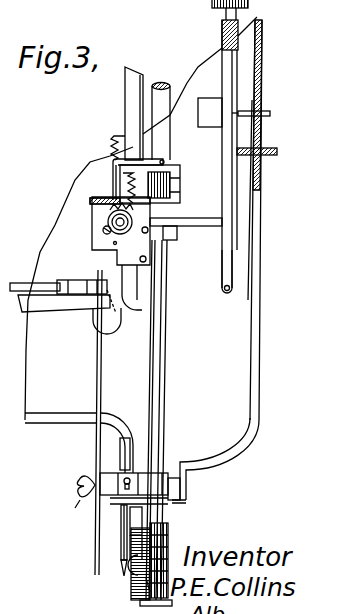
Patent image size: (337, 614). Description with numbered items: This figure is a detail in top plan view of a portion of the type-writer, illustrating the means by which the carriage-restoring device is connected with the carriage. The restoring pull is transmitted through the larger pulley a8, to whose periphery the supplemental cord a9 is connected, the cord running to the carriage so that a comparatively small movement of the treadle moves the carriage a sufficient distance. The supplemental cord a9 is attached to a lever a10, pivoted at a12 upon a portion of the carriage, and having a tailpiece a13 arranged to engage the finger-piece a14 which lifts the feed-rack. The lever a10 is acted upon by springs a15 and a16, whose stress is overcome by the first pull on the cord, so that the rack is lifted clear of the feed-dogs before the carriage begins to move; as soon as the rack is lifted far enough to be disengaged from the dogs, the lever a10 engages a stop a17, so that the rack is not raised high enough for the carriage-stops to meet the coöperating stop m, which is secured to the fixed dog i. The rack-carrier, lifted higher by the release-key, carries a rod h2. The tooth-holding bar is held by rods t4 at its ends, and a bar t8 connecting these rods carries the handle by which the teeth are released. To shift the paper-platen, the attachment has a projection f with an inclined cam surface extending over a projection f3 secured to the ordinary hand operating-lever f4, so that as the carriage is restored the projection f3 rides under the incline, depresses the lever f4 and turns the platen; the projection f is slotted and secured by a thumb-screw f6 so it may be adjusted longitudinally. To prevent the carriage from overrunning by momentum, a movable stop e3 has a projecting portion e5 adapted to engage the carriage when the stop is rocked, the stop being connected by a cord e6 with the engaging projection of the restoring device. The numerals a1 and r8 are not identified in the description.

The projection f is at (97, 391).
The rod h2 is at (252, 30).
The coöperating stop m is at (262, 112).
The fixed dog i is at (258, 122).
The supplemental cord a9 is at (160, 395).
The spring a15 is at (112, 136).
The lever a10 is at (113, 163).
The spring a16 is at (135, 188).
The pivot a12 is at (95, 193).
The stop a17 is at (93, 202).
The tailpiece a13 is at (97, 225).
The hand operating-lever f4 is at (32, 282).
The finger-piece a14 is at (103, 264).
The projection f3 is at (90, 297).
The bar t8 is at (230, 271).
The rod t4 is at (232, 289).
The projecting portion e5 is at (125, 470).
The thumb-screw f6 is at (87, 499).
The cord e6 is at (123, 520).
The movable stop e3 is at (123, 558).
The larger pulley a8 is at (160, 538).
The shaft a1 is at (147, 580).
The member r8 is at (26, 10).